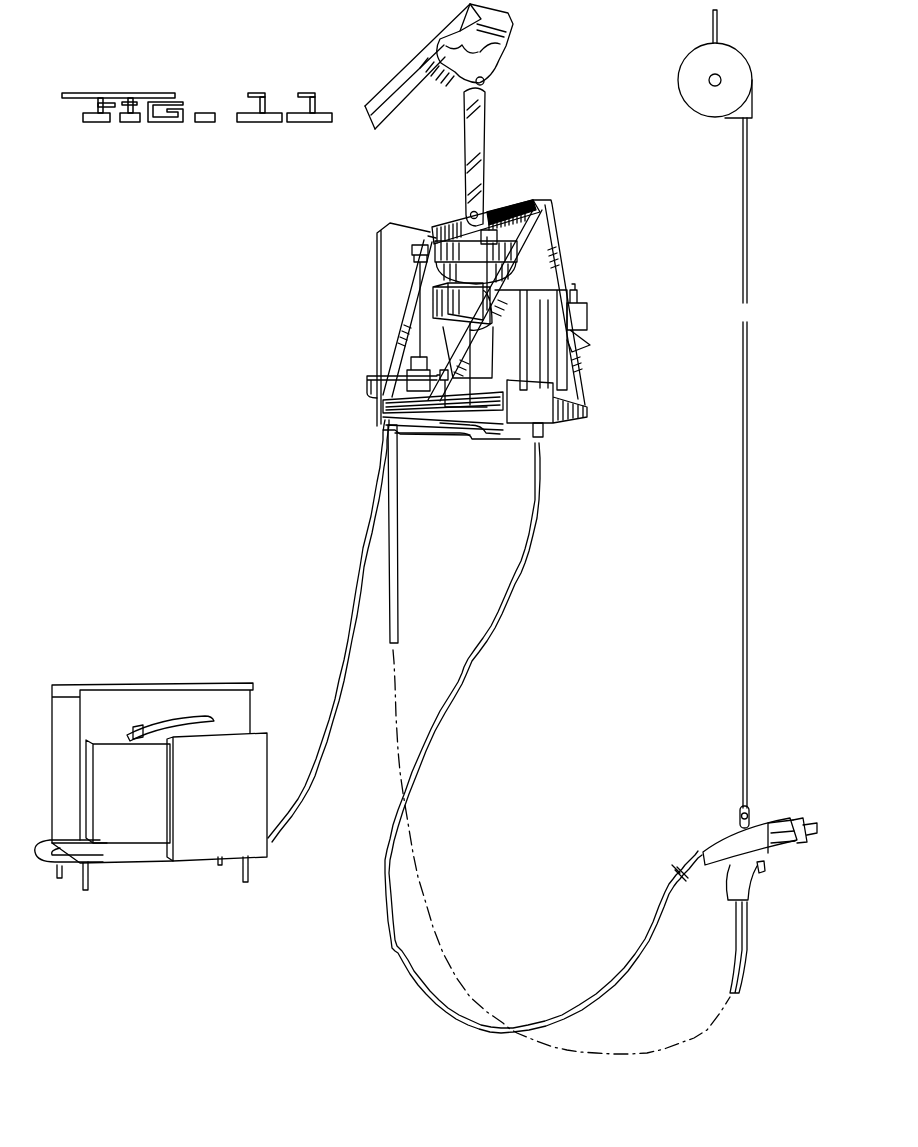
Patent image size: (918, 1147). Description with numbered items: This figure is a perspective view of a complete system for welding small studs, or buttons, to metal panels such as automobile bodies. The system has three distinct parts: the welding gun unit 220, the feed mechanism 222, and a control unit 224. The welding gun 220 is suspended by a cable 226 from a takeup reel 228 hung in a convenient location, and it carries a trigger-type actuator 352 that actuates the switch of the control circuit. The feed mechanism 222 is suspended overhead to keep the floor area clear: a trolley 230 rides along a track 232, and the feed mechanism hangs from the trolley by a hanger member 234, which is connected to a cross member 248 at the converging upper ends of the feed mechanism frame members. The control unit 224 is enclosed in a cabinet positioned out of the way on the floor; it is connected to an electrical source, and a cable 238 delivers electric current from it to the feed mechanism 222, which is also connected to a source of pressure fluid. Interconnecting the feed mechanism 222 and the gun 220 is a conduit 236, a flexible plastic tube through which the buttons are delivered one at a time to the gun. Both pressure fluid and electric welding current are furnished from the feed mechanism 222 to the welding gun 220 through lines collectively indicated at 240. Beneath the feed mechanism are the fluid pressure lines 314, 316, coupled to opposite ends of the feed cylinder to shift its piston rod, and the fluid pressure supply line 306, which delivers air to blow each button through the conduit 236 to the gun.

The welding gun unit 220 is at (712, 830).
The feed mechanism 222 is at (372, 328).
The control unit 224 is at (146, 663).
The cable 226 is at (742, 685).
The takeup reel 228 is at (694, 97).
The trolley 230 is at (496, 48).
The track 232 is at (411, 104).
The hanger member 234 is at (471, 144).
The conduit 236 is at (512, 598).
The cable 238 is at (352, 587).
The lines 240 is at (398, 607).
The cross member 248 is at (458, 218).
The fluid pressure supply line 306 is at (493, 433).
The fluid pressure line 314 is at (445, 430).
The fluid pressure line 316 is at (420, 433).
The trigger-type actuator 352 is at (763, 874).